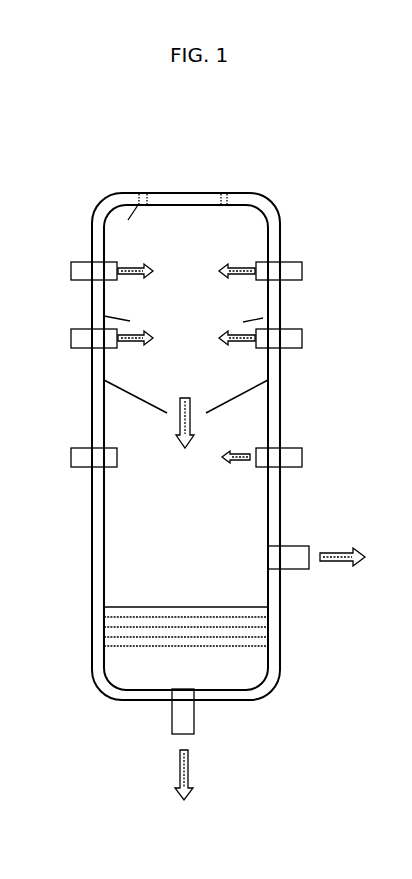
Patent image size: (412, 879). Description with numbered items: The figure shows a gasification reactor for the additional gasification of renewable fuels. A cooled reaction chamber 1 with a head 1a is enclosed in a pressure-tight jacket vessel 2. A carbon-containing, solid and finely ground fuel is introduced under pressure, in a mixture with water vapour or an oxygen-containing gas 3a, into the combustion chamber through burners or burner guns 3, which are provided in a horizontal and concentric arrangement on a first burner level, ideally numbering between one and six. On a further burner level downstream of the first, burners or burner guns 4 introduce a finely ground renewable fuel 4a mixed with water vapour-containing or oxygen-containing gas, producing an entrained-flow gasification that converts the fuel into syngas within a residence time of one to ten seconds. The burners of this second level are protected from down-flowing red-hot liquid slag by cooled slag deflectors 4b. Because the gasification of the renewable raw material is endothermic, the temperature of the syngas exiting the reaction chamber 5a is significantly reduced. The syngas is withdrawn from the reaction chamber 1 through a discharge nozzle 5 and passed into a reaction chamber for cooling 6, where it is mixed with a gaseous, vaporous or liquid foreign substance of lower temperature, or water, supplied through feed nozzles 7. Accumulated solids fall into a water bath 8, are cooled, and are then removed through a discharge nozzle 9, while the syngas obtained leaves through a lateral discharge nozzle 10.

The reaction chamber 1 is at (132, 193).
The head 1a is at (185, 193).
The jacket vessel 2 is at (265, 192).
The burners or burner guns 3 is at (84, 260).
The water vapour or oxygen-containing gas 3a is at (135, 257).
The burners or burner guns 4 is at (84, 326).
The renewable fuel 4a is at (140, 358).
The slag deflectors 4b is at (186, 276).
The discharge nozzle 5 is at (217, 413).
The syngas exiting the reaction chamber 5a is at (186, 452).
The reaction chamber for cooling 6 is at (185, 455).
The feed nozzles 7 is at (92, 436).
The water bath 8 is at (140, 603).
The discharge nozzle 9 is at (198, 708).
The lateral discharge nozzle 10 is at (302, 580).